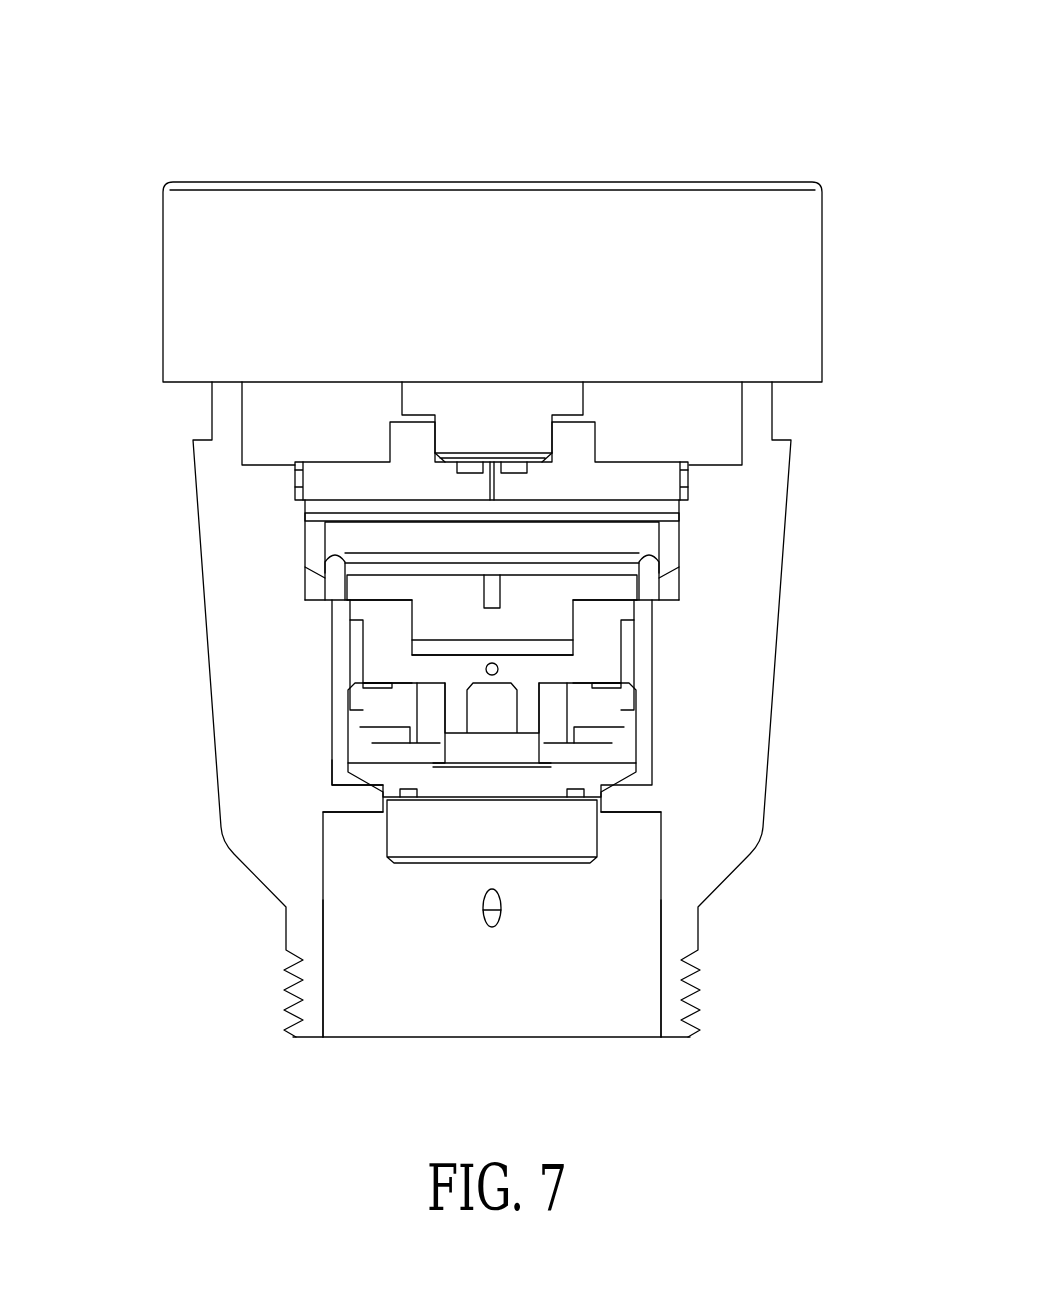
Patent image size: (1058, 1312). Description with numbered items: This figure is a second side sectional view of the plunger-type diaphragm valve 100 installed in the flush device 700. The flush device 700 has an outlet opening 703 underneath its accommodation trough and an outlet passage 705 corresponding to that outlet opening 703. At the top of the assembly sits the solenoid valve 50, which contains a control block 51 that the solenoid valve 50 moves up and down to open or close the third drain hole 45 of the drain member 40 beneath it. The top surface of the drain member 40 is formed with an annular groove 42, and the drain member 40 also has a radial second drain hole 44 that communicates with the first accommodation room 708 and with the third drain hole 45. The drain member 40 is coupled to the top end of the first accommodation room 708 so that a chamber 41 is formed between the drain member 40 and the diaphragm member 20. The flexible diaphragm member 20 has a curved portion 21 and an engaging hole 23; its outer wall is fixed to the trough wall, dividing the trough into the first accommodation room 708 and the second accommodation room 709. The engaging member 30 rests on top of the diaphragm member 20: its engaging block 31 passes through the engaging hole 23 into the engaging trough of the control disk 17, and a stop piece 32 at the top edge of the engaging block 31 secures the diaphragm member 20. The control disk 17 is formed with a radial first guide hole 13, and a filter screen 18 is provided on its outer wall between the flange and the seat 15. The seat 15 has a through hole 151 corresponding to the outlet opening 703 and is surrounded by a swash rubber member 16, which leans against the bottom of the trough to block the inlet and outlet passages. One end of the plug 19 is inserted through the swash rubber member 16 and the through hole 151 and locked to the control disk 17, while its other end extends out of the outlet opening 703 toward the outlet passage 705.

The plunger-type diaphragm valve 100 is at (823, 115).
The solenoid valve 50 is at (360, 180).
The control block 51 is at (458, 400).
The third drain hole 45 is at (497, 466).
The annular groove 42 is at (519, 466).
The drain member 40 is at (658, 456).
The chamber 41 is at (640, 537).
The second drain hole 44 is at (313, 505).
The engaging member 30 is at (548, 583).
The curved portion 21 is at (668, 548).
The first accommodation room 708 is at (305, 547).
The diaphragm member 20 is at (684, 579).
The stop piece 32 is at (307, 583).
The engaging hole 23 is at (580, 598).
The filter screen 18 is at (350, 648).
The engaging block 31 is at (548, 615).
The control disk 17 is at (383, 665).
The seat 15 is at (370, 720).
The first guide hole 13 is at (499, 673).
The through hole 151 is at (545, 713).
The swash rubber member 16 is at (612, 784).
The plug 19 is at (410, 833).
The second accommodation room 709 is at (336, 762).
The outlet opening 703 is at (383, 810).
The flush device 700 is at (706, 938).
The outlet passage 705 is at (461, 993).